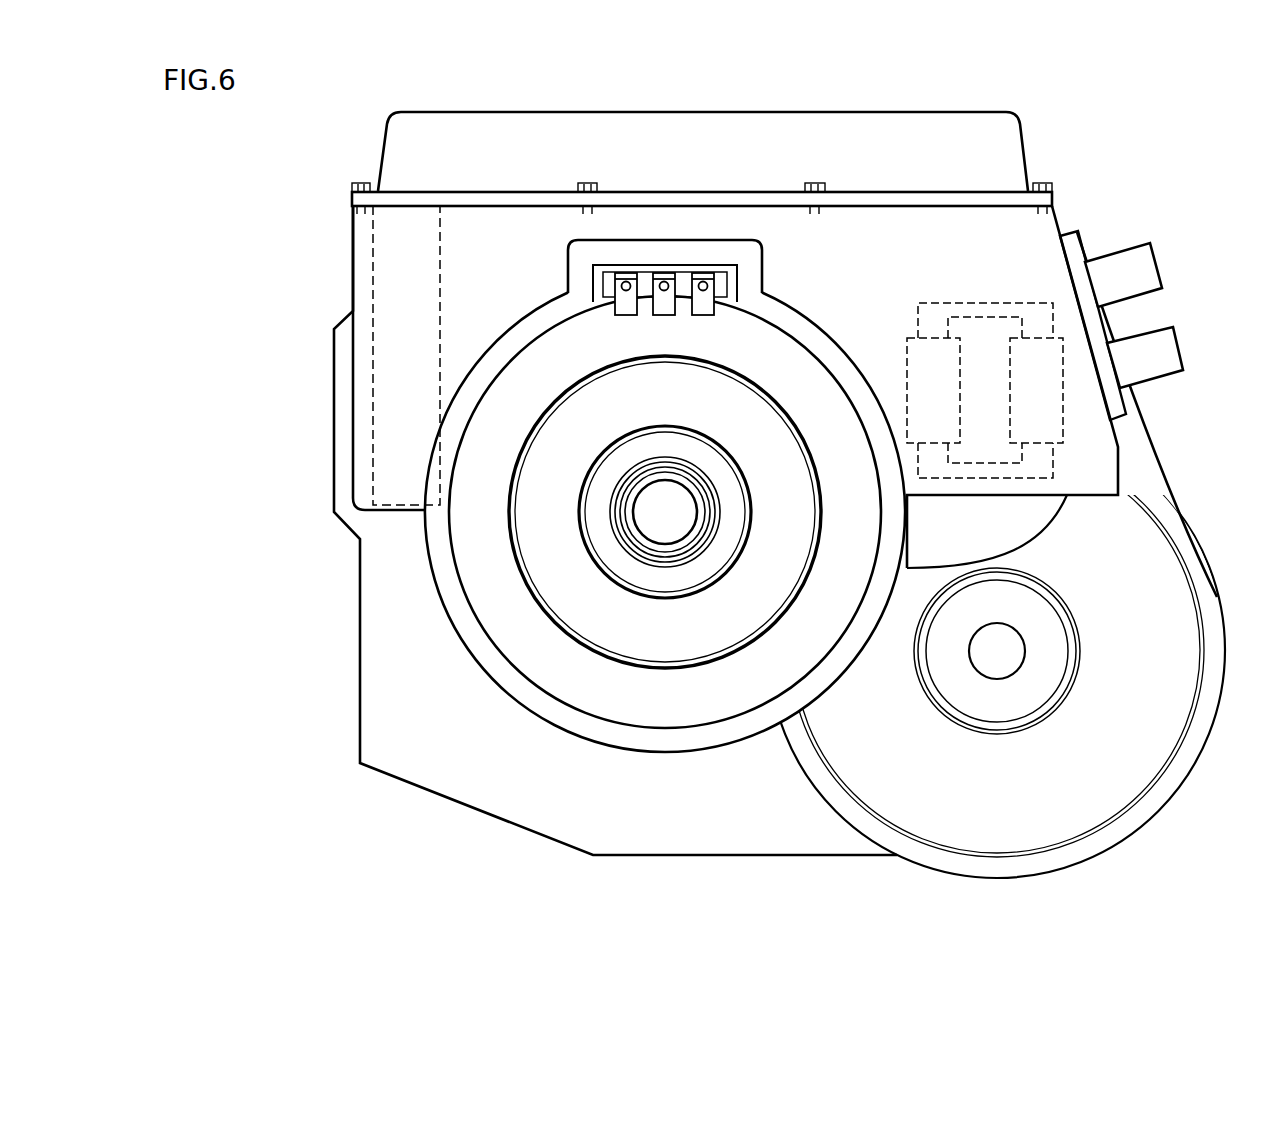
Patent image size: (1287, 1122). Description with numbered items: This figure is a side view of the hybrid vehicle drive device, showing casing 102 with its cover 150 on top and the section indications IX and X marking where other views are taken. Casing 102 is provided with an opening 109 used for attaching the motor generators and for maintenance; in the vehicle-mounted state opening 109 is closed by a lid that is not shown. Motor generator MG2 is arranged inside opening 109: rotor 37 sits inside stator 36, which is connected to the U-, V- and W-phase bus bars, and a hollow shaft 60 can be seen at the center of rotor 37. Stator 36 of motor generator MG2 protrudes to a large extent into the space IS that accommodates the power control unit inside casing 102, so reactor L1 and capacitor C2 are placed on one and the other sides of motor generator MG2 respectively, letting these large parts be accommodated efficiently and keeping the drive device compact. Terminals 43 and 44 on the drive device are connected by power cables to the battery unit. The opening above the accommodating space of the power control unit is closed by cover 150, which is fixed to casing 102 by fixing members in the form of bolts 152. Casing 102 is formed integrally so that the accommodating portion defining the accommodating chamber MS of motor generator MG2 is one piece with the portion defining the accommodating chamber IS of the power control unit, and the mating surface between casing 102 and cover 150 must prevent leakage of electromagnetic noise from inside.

The cover 150 is at (982, 111).
The bolts 152 is at (588, 182).
The capacitor C2 is at (443, 229).
The accommodating space of power control unit IS is at (549, 240).
The terminal 43 is at (1160, 262).
The terminal 44 is at (1183, 348).
The reactor L1 is at (1063, 432).
The casing 102 is at (1118, 459).
The hollow shaft 60 is at (633, 513).
The rotor 37 is at (582, 537).
The stator 36 is at (458, 588).
The motor generator MG2 is at (513, 618).
The opening 109 is at (528, 686).
The accommodating space of motor generator MS is at (679, 628).
The section line IX is at (663, 103).
The section line X is at (935, 103).